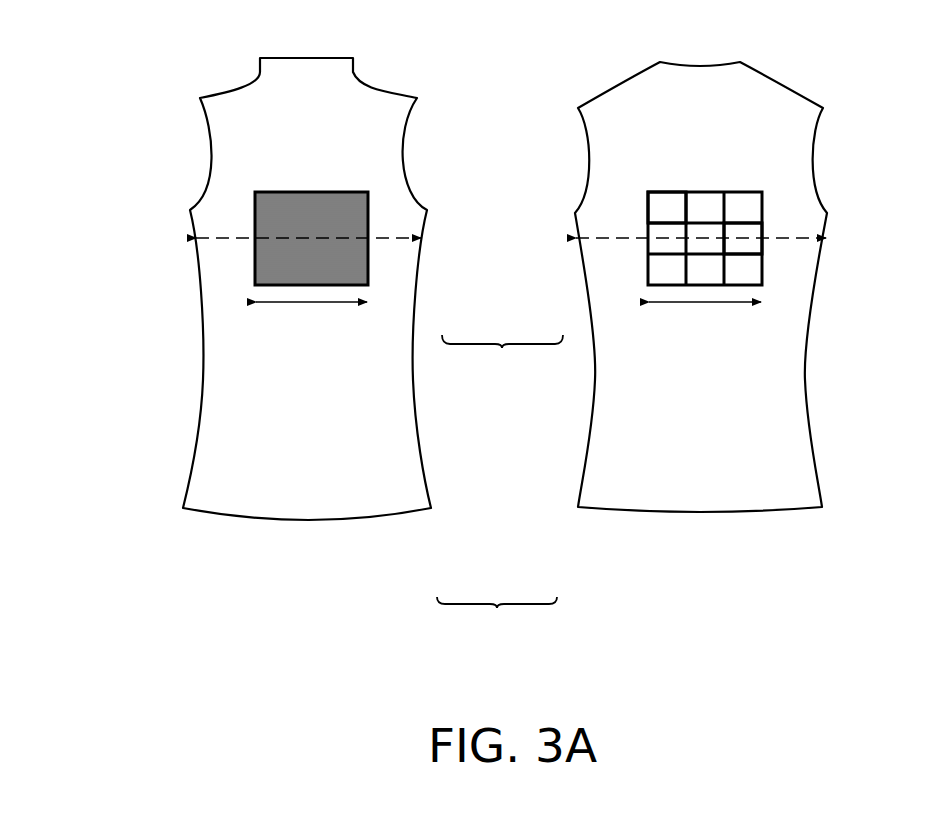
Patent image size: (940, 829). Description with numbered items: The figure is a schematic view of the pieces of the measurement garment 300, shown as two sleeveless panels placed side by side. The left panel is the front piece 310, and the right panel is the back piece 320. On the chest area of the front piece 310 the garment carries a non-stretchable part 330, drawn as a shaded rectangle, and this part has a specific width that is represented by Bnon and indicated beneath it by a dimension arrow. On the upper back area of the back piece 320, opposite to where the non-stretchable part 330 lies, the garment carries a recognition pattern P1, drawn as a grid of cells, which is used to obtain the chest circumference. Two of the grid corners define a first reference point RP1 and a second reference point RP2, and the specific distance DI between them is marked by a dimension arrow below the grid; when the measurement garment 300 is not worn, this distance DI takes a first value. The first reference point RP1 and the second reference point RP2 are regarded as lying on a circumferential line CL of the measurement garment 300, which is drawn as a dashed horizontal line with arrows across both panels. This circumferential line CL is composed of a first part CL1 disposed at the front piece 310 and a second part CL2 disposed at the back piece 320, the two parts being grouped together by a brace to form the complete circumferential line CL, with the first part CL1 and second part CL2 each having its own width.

The measurement garment 300 is at (497, 622).
The front piece 310 is at (395, 497).
The back piece 320 is at (598, 498).
The non-stretchable part 330 is at (253, 203).
The recognition pattern P1 is at (762, 192).
The first reference point RP1 is at (647, 250).
The second reference point RP2 is at (764, 240).
The first part CL1 is at (402, 241).
The second part CL2 is at (598, 241).
The circumferential line CL is at (502, 362).
The specific distance DI is at (705, 323).
The specific width of the non-stretchable part Bnon is at (311, 321).